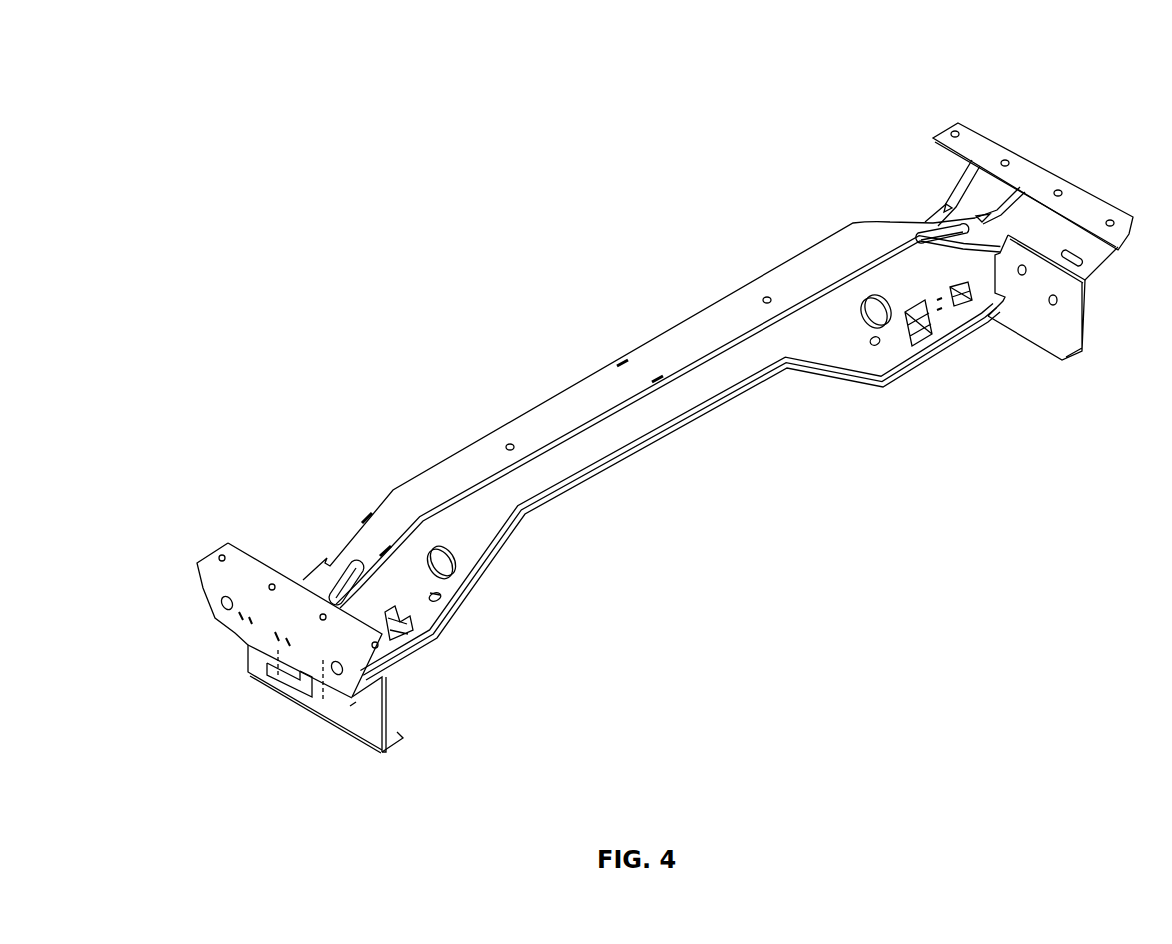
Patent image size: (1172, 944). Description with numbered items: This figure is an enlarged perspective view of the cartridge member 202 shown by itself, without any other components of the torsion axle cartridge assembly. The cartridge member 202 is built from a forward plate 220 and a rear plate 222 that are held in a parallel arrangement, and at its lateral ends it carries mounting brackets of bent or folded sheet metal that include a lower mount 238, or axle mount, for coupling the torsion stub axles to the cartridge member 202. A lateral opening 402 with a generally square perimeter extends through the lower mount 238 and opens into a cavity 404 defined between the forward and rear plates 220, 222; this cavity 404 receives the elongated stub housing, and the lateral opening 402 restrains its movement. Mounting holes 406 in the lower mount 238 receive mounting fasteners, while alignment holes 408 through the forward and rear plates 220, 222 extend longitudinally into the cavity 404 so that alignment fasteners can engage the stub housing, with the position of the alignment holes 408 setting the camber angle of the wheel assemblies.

The cartridge member 202 is at (942, 108).
The forward plate 220 is at (547, 400).
The rear plate 222 is at (633, 433).
The lower mount 238 is at (388, 725).
The lateral opening 402 is at (298, 682).
The cavity 404 is at (433, 640).
The mounting holes 406 is at (354, 718).
The alignment holes 408 is at (447, 597).